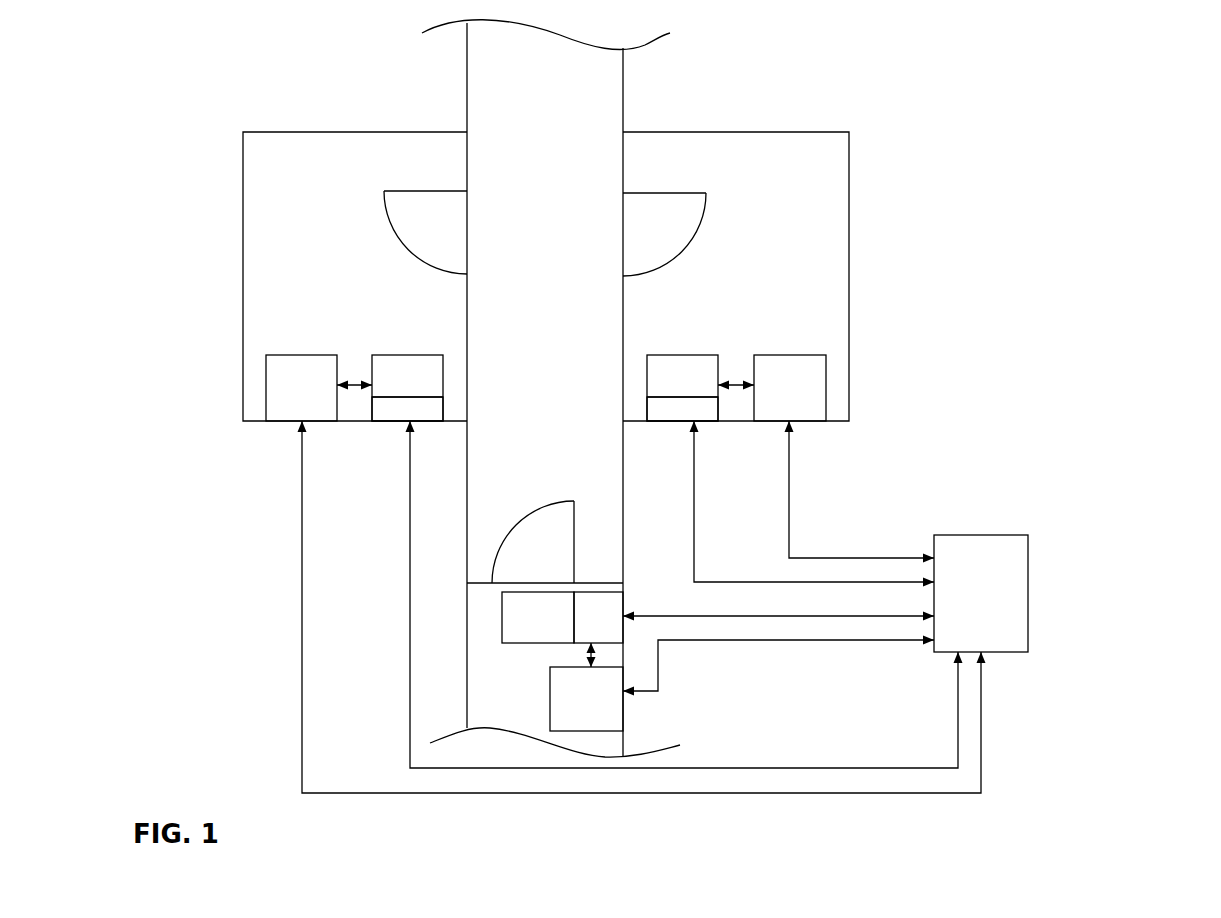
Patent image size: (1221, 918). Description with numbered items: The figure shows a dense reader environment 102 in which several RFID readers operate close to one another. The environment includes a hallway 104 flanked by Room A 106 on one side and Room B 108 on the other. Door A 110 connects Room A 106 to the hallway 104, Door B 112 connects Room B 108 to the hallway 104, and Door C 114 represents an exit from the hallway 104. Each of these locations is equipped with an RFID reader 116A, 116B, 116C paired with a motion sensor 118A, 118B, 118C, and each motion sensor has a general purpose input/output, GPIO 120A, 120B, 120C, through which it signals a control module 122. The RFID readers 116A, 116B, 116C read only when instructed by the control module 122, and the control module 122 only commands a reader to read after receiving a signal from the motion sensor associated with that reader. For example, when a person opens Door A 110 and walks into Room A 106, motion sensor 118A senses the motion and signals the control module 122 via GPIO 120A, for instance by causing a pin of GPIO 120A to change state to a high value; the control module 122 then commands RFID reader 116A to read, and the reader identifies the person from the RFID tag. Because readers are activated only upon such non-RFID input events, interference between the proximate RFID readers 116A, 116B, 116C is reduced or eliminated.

The dense reader environment 102 is at (1172, 102).
The hallway 104 is at (593, 90).
The Room A 106 is at (300, 178).
The Room B 108 is at (825, 180).
The Door A 110 is at (467, 215).
The Door B 112 is at (623, 235).
The Door C 114 is at (523, 583).
The RFID reader 116A is at (308, 353).
The RFID reader 116B is at (783, 353).
The RFID reader 116C is at (624, 738).
The motion sensor 118A is at (413, 353).
The motion sensor 118B is at (688, 353).
The motion sensor 118C is at (533, 643).
The GPIO 120A is at (443, 408).
The GPIO 120B is at (647, 408).
The GPIO 120C is at (623, 600).
The control module 122 is at (969, 535).